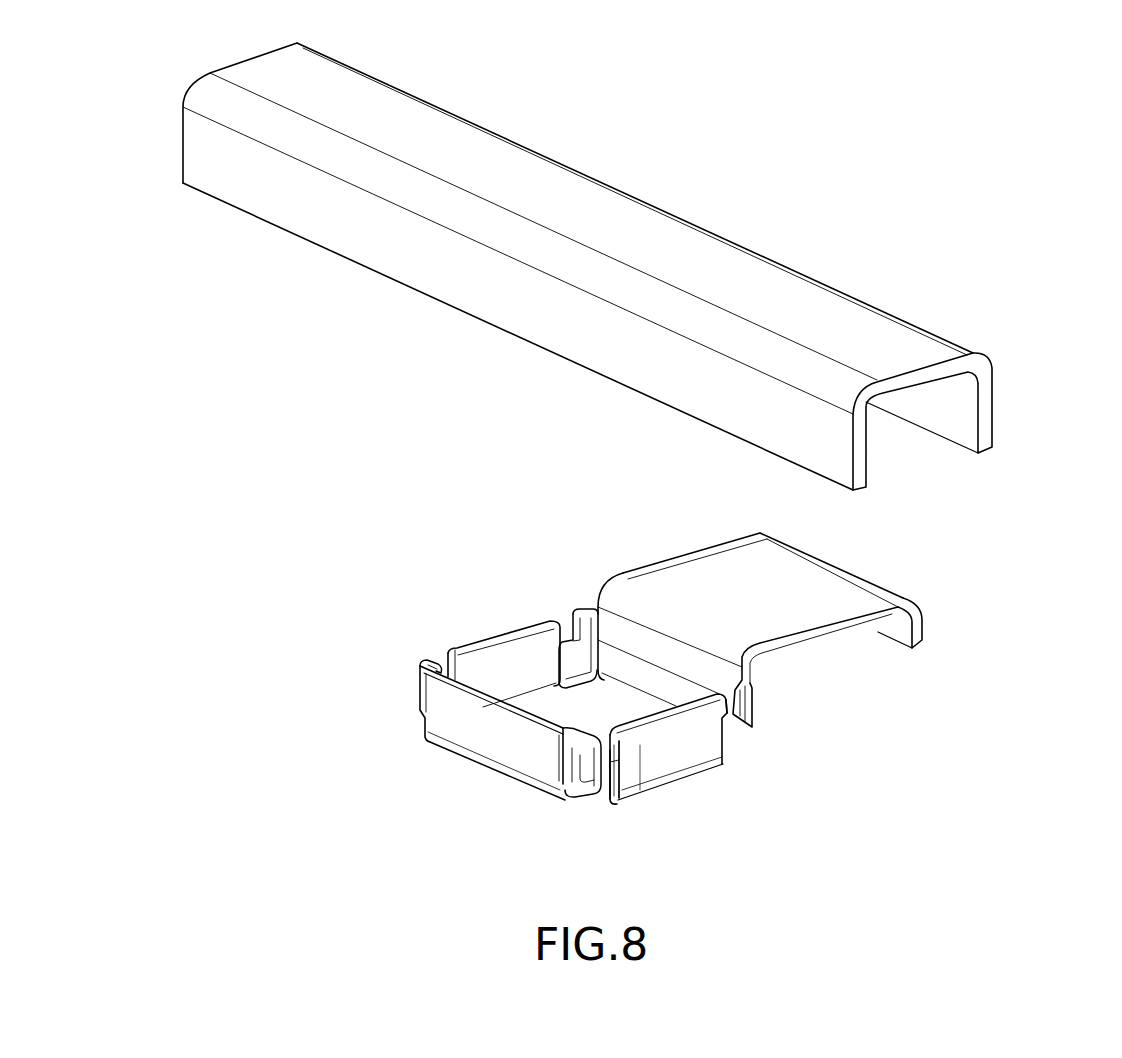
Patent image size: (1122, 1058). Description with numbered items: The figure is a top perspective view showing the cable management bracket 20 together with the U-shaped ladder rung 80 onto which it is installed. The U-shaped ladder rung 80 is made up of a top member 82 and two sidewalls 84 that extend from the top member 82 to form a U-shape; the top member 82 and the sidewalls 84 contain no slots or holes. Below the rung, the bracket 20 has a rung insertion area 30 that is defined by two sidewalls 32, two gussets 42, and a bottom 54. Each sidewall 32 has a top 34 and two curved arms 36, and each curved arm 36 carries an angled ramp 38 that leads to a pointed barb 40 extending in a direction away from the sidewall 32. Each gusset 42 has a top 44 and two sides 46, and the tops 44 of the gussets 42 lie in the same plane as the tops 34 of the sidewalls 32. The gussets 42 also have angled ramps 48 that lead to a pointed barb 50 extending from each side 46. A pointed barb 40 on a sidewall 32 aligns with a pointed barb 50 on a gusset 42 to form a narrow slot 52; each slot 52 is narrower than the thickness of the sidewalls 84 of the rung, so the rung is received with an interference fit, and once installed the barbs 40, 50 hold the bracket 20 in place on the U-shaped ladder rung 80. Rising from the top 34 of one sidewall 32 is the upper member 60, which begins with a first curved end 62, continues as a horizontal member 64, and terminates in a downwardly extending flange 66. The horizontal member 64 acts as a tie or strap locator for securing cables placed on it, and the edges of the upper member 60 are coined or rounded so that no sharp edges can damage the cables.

The bracket 20 is at (430, 497).
The rung insertion area 30 is at (350, 636).
The sidewall 32 is at (457, 713).
The top 34 is at (457, 679).
The curved arm 36 is at (580, 752).
The angled ramp 38 is at (588, 762).
The pointed barb 40 is at (614, 780).
The gusset 42 is at (512, 655).
The top 44 is at (692, 703).
The side 46 is at (740, 740).
The angled ramp 48 is at (667, 741).
The pointed barb 50 is at (623, 790).
The slot 52 is at (438, 662).
The bottom 54 is at (583, 700).
The upper member 60 is at (999, 650).
The first curved end 62 is at (647, 606).
The horizontal member 64 is at (808, 597).
The downwardly extending flange 66 is at (893, 626).
The U-shaped ladder rung 80 is at (928, 237).
The top member 82 is at (677, 253).
The sidewall 84 is at (640, 355).